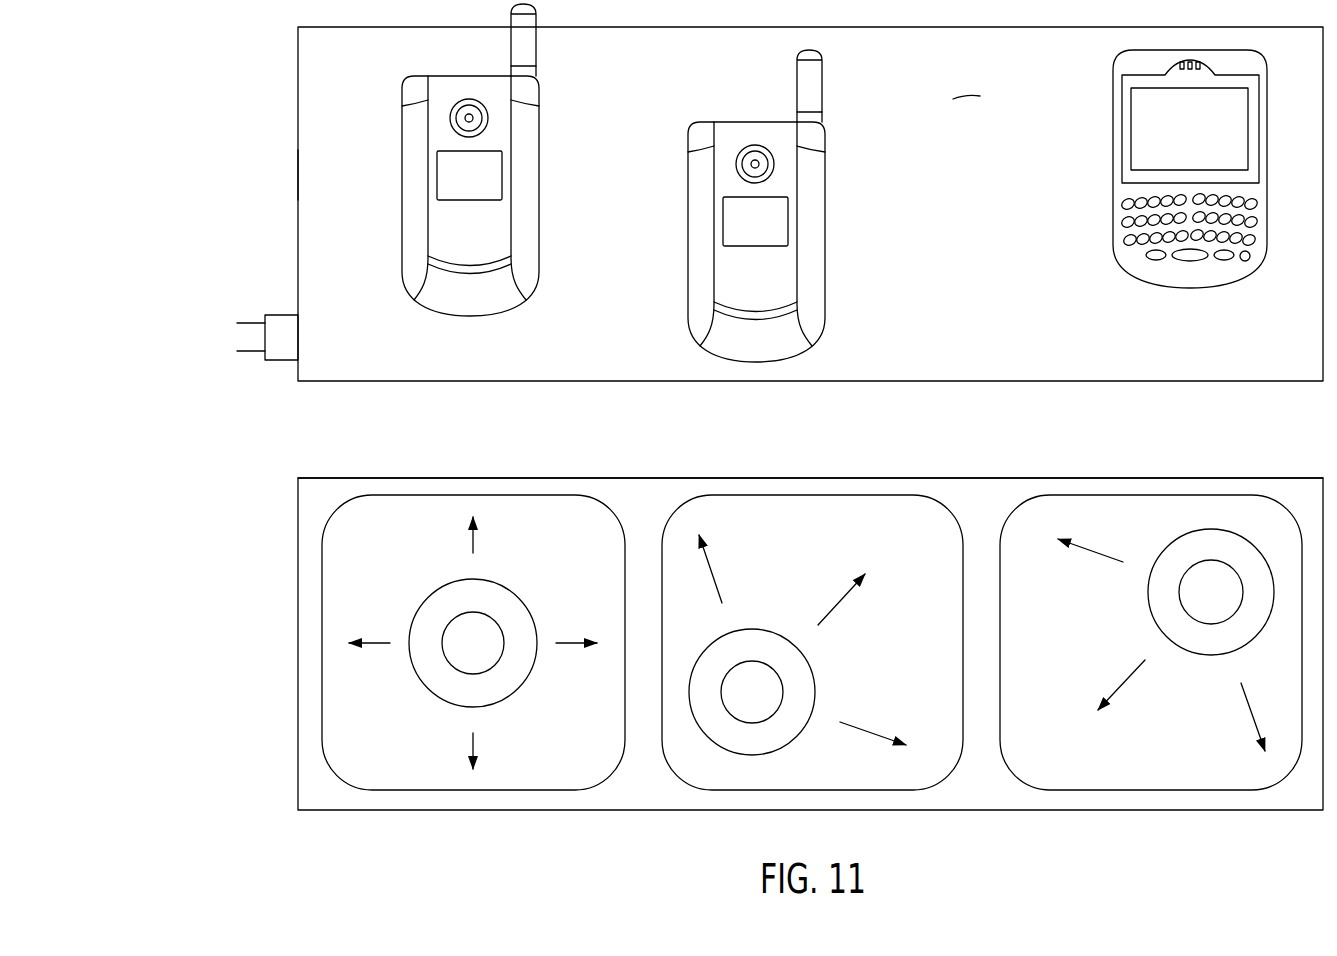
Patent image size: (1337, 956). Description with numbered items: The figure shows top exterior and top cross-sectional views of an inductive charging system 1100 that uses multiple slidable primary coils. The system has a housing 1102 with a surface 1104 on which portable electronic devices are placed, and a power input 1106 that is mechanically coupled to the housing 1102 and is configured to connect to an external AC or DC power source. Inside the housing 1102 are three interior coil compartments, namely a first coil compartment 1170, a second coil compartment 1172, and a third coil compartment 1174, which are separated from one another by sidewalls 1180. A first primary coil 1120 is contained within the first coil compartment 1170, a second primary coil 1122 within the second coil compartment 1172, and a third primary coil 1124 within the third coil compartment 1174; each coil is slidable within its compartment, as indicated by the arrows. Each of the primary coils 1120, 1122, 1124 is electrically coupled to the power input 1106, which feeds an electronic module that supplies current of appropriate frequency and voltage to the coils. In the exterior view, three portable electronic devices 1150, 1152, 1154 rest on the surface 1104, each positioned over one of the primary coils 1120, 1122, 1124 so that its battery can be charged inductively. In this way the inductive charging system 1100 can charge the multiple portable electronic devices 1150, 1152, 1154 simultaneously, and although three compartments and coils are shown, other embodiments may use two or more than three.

The inductive charging system 1100 is at (257, 411).
The housing 1102 is at (298, 96).
The surface 1104 is at (310, 166).
The power input 1106 is at (281, 315).
The first primary coil 1120 is at (512, 604).
The second primary coil 1122 is at (808, 680).
The third primary coil 1124 is at (1210, 647).
The portable electronic device 1150 is at (500, 112).
The portable electronic device 1152 is at (732, 134).
The portable electronic device 1154 is at (1122, 190).
The first coil compartment 1170 is at (395, 777).
The second coil compartment 1172 is at (898, 776).
The third coil compartment 1174 is at (1160, 776).
The sidewalls 1180 is at (319, 503).